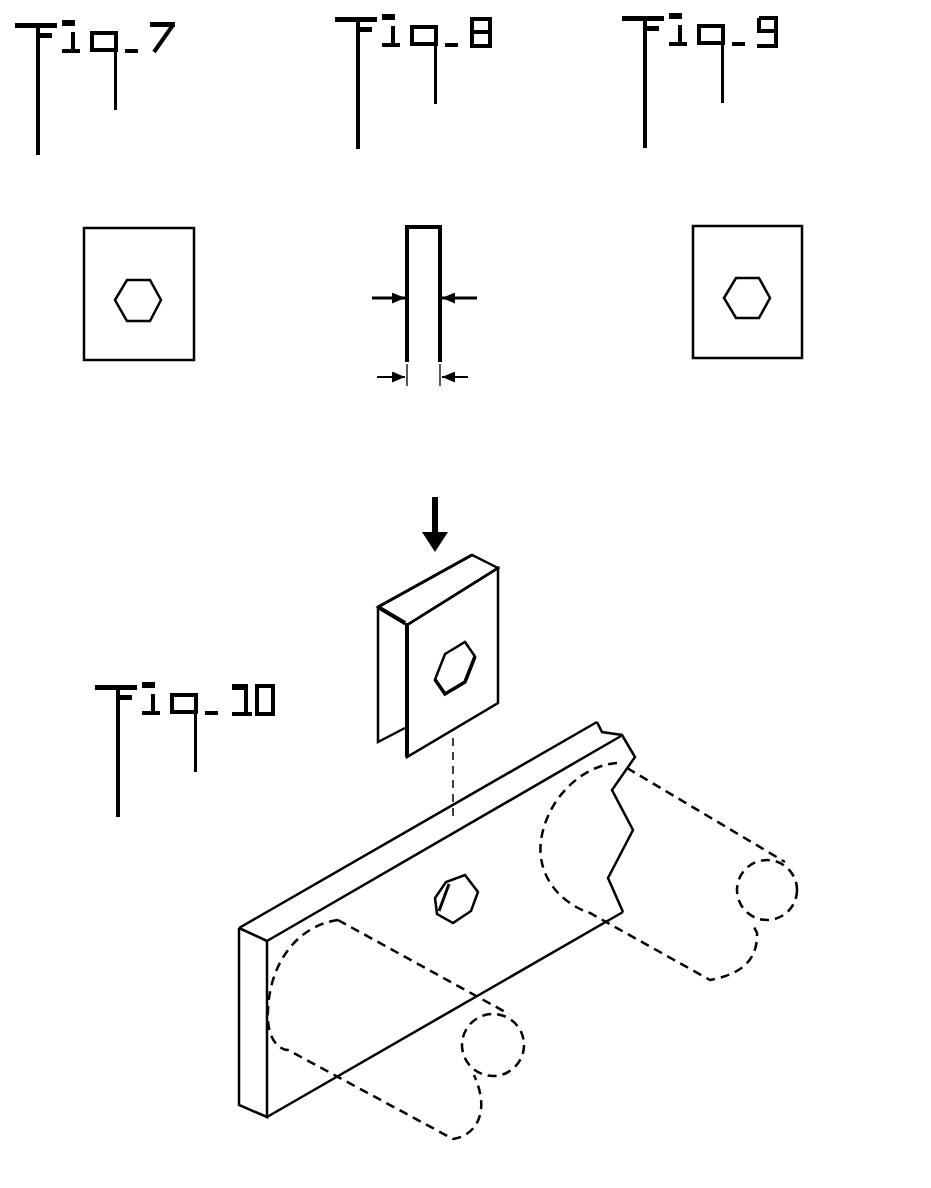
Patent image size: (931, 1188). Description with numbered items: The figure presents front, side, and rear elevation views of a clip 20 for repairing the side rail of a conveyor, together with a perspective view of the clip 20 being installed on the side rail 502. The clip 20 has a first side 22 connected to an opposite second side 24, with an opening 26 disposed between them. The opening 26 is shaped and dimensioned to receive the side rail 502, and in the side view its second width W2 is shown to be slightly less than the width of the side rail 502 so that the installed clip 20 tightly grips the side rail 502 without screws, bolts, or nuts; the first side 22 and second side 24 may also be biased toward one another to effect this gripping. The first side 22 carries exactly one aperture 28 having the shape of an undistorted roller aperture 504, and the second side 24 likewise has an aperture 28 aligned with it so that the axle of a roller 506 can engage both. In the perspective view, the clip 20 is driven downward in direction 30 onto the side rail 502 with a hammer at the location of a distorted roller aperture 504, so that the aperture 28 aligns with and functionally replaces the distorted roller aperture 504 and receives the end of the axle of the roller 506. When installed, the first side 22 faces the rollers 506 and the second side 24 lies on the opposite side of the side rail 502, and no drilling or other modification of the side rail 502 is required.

In FIG. 7, the clip 20 is at (177, 277).
In FIG. 8, the clip 20 is at (418, 296).
In FIG. 9, the clip 20 is at (748, 268).
In FIG. 10, the clip 20 is at (437, 664).
In FIG. 7, the first side 22 is at (170, 343).
In FIG. 8, the first side 22 is at (440, 352).
In FIG. 10, the first side 22 is at (485, 688).
In FIG. 8, the second side 24 is at (407, 352).
In FIG. 9, the second side 24 is at (720, 343).
In FIG. 10, the second side 24 is at (378, 692).
In FIG. 8, the opening 26 is at (423, 320).
In FIG. 10, the opening 26 is at (397, 695).
In FIG. 7, the aperture 28 is at (145, 306).
In FIG. 9, the aperture 28 is at (742, 303).
In FIG. 10, the aperture 28 is at (462, 667).
In FIG. 10, the direction 30 is at (438, 520).
In FIG. 8, the second width W2 is at (418, 373).
In FIG. 10, the side rail 502 is at (588, 740).
In FIG. 10, the roller aperture 504 is at (452, 898).
In FIG. 10, the roller 506 is at (750, 820).